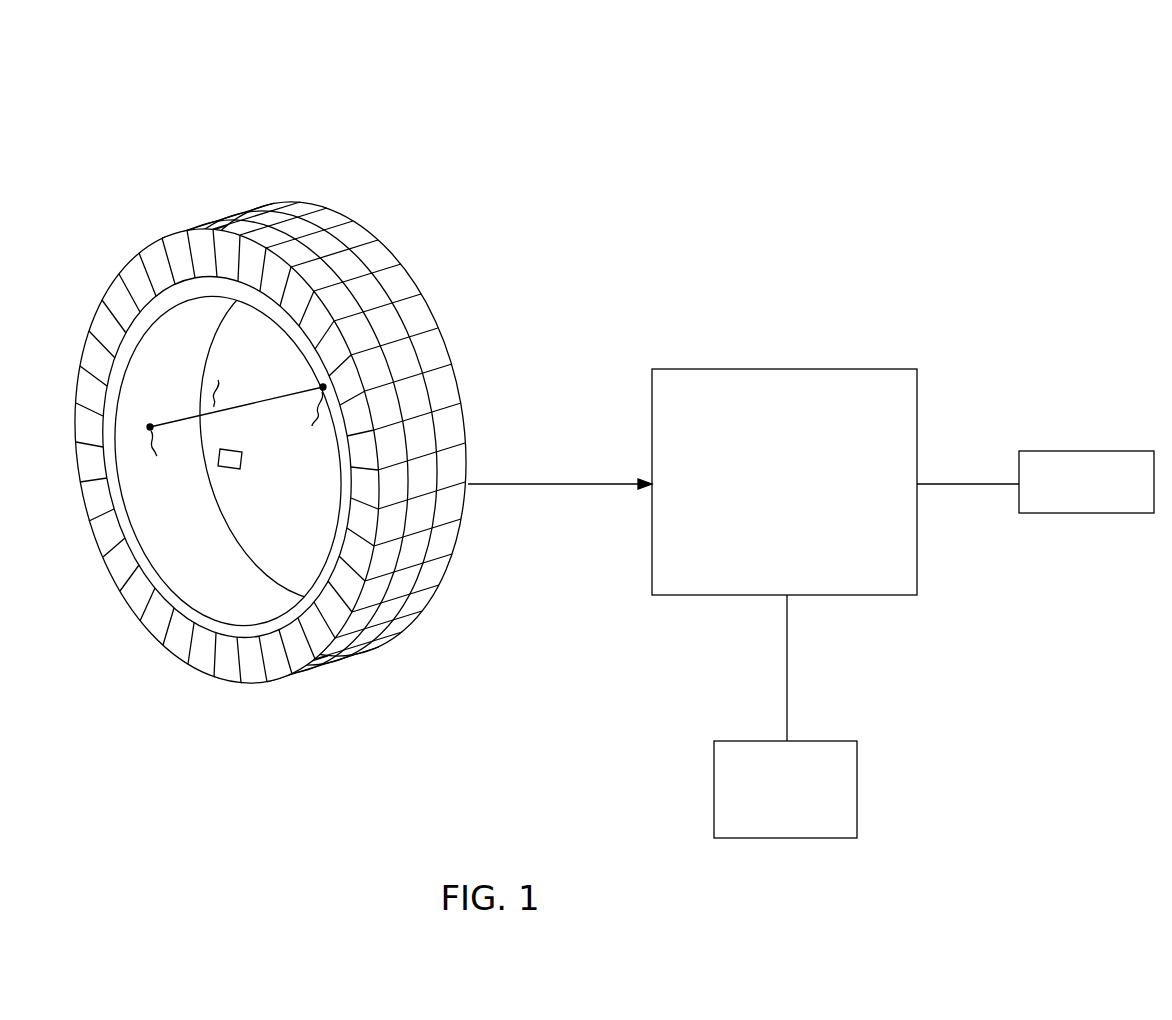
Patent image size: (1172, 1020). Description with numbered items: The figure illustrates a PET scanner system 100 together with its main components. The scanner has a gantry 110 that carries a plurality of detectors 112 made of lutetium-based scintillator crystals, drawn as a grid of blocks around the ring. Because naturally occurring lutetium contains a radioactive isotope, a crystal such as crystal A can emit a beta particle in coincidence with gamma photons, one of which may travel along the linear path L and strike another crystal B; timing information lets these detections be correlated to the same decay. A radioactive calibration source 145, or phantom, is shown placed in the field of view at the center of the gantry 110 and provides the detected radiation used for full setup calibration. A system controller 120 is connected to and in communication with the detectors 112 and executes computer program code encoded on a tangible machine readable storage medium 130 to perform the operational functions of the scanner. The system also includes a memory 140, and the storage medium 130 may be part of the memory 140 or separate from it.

The PET scanner system 100 is at (116, 94).
The gantry 110 is at (106, 253).
The detectors 112 is at (302, 206).
The system controller 120 is at (700, 369).
The storage medium 130 is at (727, 741).
The memory 140 is at (1047, 451).
The radioactive calibration source 145 is at (231, 470).